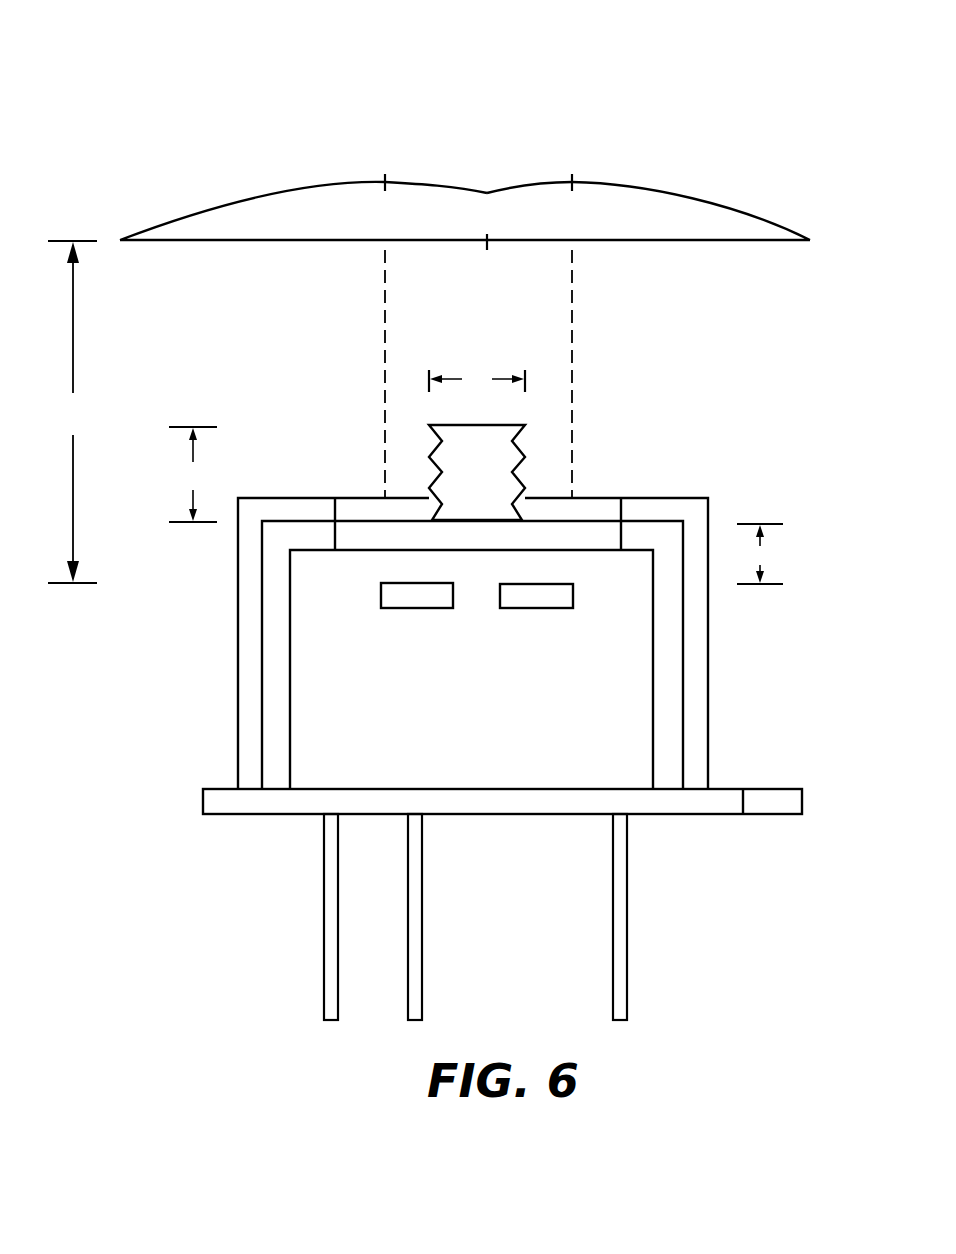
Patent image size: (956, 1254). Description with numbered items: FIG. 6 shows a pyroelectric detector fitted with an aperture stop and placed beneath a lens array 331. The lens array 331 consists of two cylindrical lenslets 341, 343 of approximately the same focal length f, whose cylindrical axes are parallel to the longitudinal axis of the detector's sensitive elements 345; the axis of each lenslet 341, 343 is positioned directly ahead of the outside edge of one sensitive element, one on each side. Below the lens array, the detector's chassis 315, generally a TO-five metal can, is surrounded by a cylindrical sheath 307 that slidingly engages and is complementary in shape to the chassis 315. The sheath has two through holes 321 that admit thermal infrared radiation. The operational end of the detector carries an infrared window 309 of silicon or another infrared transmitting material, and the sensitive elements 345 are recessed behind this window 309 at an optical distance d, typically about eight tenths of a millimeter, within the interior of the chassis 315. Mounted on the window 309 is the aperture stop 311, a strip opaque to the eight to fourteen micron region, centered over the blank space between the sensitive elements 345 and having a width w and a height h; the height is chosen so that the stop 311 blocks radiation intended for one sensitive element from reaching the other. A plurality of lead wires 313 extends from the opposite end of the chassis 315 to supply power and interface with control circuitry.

The lens array 331 is at (160, 47).
The lenslet 341 is at (316, 186).
The lenslet 343 is at (649, 189).
The cylindrical sheath 307 is at (238, 668).
The chassis 315 is at (290, 692).
The through holes 321 is at (362, 497).
The infrared window 309 is at (573, 552).
The aperture stop 311 is at (526, 457).
The sensitive elements 345 is at (536, 609).
The lead wires 313 is at (324, 970).